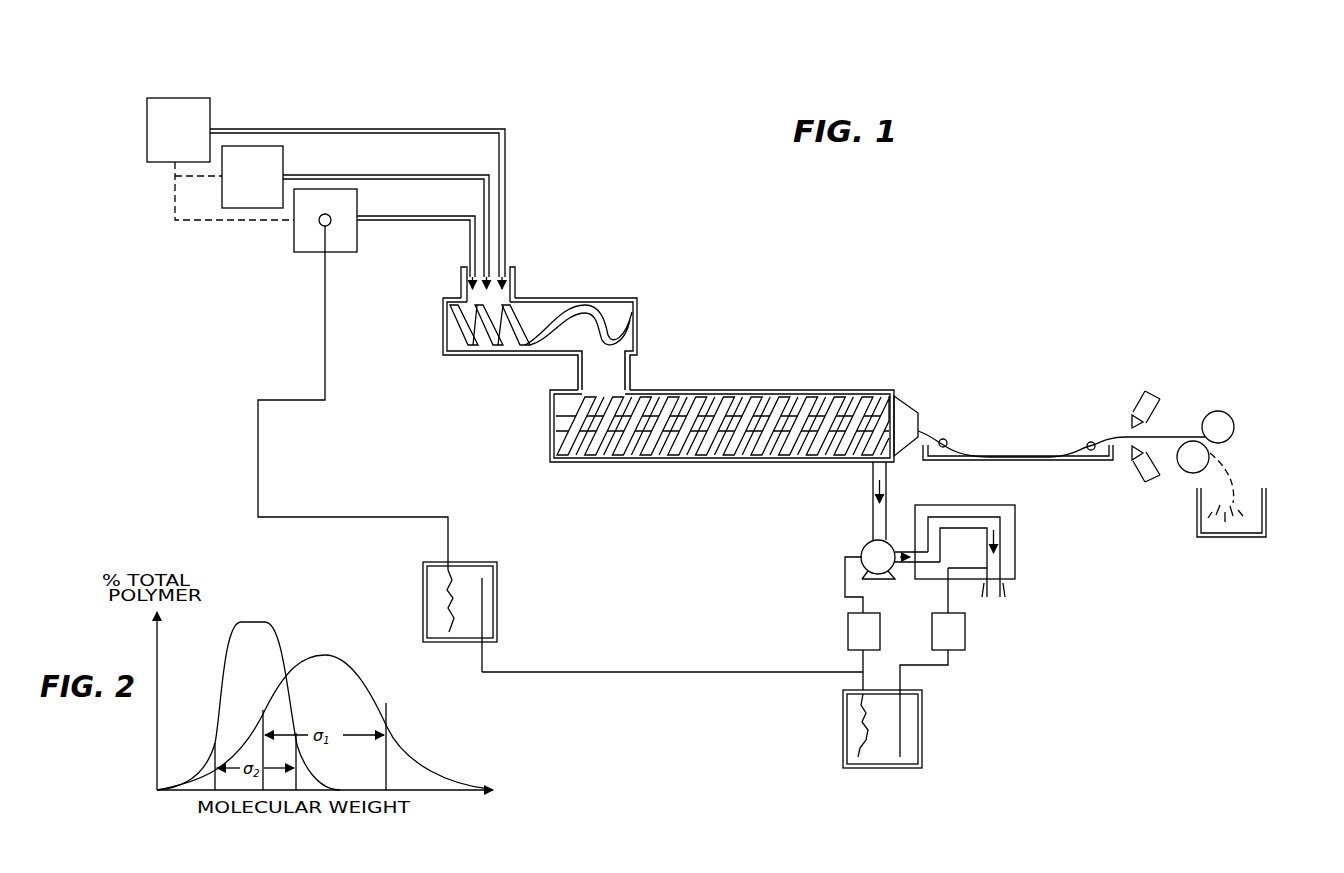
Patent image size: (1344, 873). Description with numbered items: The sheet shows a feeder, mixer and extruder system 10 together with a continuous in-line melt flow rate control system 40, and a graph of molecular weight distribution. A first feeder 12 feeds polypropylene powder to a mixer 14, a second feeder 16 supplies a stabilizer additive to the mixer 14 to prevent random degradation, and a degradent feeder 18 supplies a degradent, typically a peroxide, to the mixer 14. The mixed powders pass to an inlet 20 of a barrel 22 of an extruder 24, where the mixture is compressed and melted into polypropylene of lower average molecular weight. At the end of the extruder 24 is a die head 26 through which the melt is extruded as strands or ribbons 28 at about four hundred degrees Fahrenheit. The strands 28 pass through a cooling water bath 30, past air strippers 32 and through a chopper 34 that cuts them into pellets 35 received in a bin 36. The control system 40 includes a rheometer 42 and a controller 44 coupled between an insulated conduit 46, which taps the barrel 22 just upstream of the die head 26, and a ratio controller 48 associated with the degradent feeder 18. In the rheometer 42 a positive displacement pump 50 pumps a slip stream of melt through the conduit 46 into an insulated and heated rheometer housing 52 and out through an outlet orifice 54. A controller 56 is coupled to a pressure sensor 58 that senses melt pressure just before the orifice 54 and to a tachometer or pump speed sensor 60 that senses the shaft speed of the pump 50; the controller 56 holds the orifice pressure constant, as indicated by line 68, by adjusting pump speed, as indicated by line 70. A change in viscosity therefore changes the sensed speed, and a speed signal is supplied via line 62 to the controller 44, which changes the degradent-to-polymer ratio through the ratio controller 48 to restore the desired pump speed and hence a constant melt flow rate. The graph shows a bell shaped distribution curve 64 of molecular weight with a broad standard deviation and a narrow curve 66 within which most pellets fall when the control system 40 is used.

In FIG. 1, the feeder, mixer and extruder system 10 is at (620, 290).
In FIG. 1, the first feeder 12 is at (185, 98).
In FIG. 1, the mixer 14 is at (521, 291).
In FIG. 1, the second feeder 16 is at (283, 161).
In FIG. 1, the degradent feeder 18 is at (357, 200).
In FIG. 1, the inlet 20 is at (624, 376).
In FIG. 1, the barrel 22 is at (620, 462).
In FIG. 1, the extruder 24 is at (770, 390).
In FIG. 1, the die head 26 is at (908, 414).
In FIG. 1, the strands or ribbons 28 is at (934, 440).
In FIG. 1, the cooling water bath 30 is at (1011, 468).
In FIG. 1, the air strippers 32 is at (1158, 393).
In FIG. 1, the chopper 34 is at (1233, 420).
In FIG. 1, the pellets 35 is at (1240, 500).
In FIG. 1, the bin 36 is at (1240, 538).
In FIG. 1, the continuous in-line melt flow rate control system 40 is at (692, 703).
In FIG. 1, the rheometer 42 is at (996, 683).
In FIG. 1, the controller 44 is at (497, 605).
In FIG. 1, the insulated conduit 46 is at (872, 508).
In FIG. 1, the ratio controller 48 is at (320, 226).
In FIG. 1, the positive displacement pump 50 is at (861, 550).
In FIG. 1, the rheometer housing 52 is at (1015, 548).
In FIG. 1, the outlet orifice 54 is at (1003, 590).
In FIG. 1, the controller 56 is at (922, 760).
In FIG. 1, the pressure sensor 58 is at (966, 630).
In FIG. 1, the tachometer or pump speed sensor 60 is at (848, 632).
In FIG. 1, the line 62 is at (640, 672).
In FIG. 2, the bell shaped distribution curve 64 is at (383, 706).
In FIG. 2, the curve 66 is at (247, 622).
In FIG. 1, the line 68 is at (905, 728).
In FIG. 1, the line 70 is at (851, 730).